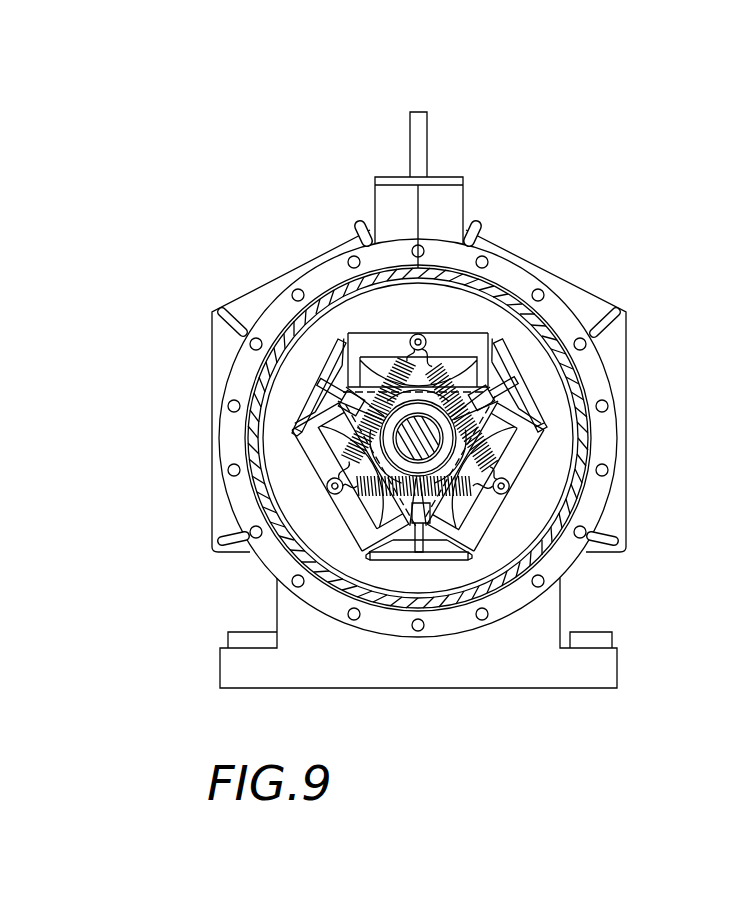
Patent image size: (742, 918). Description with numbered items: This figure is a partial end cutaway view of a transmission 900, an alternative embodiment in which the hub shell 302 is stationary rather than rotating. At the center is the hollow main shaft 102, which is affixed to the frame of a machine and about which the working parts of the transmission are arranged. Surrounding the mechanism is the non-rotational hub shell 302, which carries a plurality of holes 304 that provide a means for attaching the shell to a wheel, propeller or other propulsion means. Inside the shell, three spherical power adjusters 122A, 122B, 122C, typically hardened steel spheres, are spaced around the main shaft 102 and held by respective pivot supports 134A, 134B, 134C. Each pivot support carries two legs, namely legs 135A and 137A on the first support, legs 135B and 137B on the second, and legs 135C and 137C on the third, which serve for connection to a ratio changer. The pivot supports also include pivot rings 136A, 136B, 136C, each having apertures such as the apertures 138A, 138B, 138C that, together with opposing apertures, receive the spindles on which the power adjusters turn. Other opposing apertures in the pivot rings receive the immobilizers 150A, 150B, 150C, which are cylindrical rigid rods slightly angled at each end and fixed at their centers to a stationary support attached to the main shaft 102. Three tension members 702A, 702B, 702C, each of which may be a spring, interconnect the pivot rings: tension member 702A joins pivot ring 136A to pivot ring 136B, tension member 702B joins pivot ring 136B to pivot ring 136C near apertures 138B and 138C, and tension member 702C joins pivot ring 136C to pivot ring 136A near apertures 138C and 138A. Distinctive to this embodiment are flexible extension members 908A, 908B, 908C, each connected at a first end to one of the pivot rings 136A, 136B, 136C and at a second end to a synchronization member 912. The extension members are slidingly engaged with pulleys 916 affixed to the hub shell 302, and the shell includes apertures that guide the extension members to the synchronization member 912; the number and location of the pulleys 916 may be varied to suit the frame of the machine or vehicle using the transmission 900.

The transmission 900 is at (272, 136).
The synchronization member 912 is at (455, 345).
The hub shell 302 is at (440, 250).
The holes 304 is at (302, 288).
The main shaft 102 is at (222, 407).
The pulleys 916 is at (627, 314).
The leg 137A is at (348, 365).
The leg 137B is at (540, 436).
The leg 137C is at (365, 560).
The pivot support 134A is at (348, 340).
The pivot support 134B is at (525, 458).
The pivot support 134C is at (400, 560).
The power adjuster 122A is at (482, 332).
The power adjuster 122B is at (565, 520).
The power adjuster 122C is at (330, 556).
The pivot ring 136A is at (355, 335).
The pivot ring 136B is at (520, 540).
The pivot ring 136C is at (330, 560).
The immobilizer 150A is at (525, 375).
The immobilizer 150B is at (417, 560).
The immobilizer 150C is at (250, 435).
The tension member 702A is at (515, 325).
The tension member 702B is at (433, 560).
The tension member 702C is at (290, 455).
The leg 135A is at (505, 340).
The leg 135B is at (468, 560).
The leg 135C is at (296, 388).
The flexible extension member 908A is at (346, 335).
The flexible extension member 908B is at (508, 488).
The flexible extension member 908C is at (328, 492).
The aperture 138A is at (500, 352).
The aperture 138B is at (515, 505).
The aperture 138C is at (330, 490).